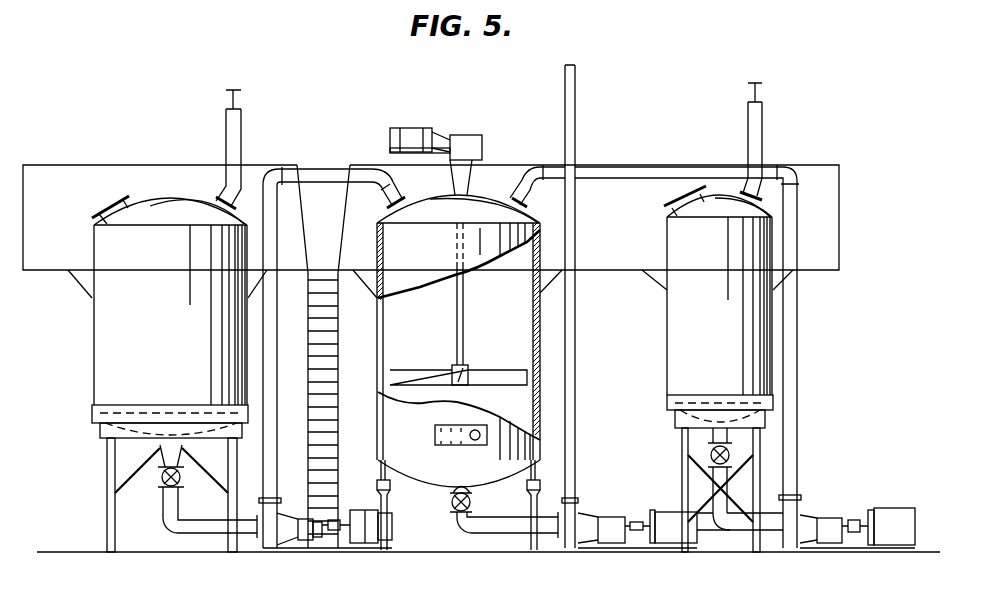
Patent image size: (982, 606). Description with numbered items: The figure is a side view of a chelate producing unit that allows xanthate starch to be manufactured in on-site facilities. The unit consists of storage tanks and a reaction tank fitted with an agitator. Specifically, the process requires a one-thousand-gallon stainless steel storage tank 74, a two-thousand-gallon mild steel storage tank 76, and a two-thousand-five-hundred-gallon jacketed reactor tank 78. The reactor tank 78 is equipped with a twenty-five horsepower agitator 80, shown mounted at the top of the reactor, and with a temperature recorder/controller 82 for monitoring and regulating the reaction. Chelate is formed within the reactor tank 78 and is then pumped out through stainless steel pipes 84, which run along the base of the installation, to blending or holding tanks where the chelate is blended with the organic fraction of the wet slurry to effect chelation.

The stainless steel storage tank 74 is at (770, 362).
The mild steel storage tank 76 is at (107, 353).
The jacketed reactor tank 78 is at (527, 333).
The agitator 80 is at (467, 143).
The temperature recorder/controller 82 is at (484, 437).
The stainless steel pipes 84 is at (502, 523).